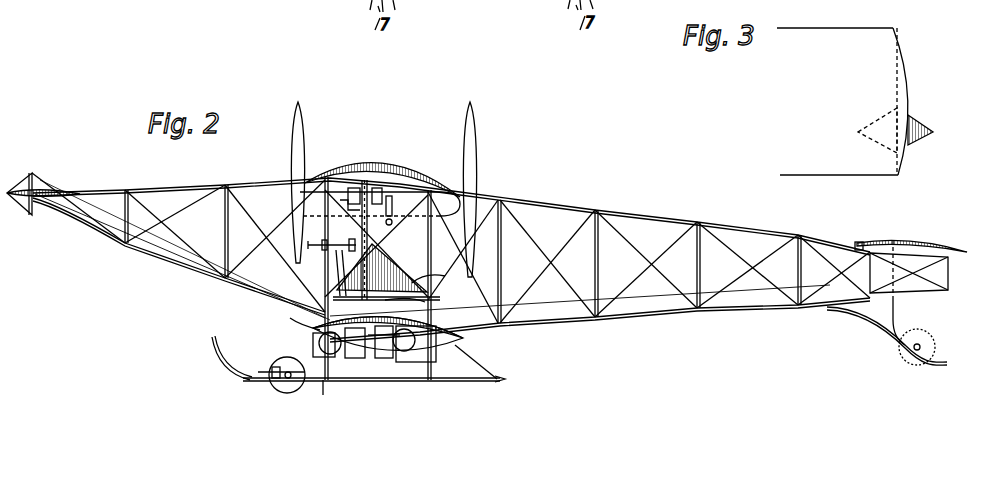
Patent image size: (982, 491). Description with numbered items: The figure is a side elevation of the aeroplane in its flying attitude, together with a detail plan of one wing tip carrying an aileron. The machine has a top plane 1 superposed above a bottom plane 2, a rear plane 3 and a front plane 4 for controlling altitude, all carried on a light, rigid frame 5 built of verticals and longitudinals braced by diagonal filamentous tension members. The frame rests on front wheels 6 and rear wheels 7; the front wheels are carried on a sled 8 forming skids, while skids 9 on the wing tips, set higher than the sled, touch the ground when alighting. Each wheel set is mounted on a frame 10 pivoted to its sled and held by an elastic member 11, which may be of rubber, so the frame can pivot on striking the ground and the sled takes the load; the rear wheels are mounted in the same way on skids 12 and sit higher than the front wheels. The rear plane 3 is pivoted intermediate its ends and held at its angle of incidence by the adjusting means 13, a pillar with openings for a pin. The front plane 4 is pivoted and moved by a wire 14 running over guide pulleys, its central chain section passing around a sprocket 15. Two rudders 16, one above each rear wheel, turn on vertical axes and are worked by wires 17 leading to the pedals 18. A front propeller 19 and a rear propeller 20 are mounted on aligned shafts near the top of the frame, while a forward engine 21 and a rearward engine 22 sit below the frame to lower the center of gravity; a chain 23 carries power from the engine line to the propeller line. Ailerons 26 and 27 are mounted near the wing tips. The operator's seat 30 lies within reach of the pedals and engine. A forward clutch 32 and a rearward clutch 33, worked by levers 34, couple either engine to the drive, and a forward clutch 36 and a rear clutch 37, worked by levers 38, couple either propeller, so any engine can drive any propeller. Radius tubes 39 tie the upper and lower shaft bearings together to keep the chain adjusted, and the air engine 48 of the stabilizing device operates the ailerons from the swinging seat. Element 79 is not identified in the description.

In FIG. 2, the top plane 1 is at (372, 170).
In FIG. 3, the top plane 1 is at (848, 72).
In FIG. 2, the bottom plane 2 is at (481, 357).
In FIG. 2, the rear plane 3 is at (905, 243).
In FIG. 2, the front plane 4 is at (68, 190).
In FIG. 2, the frame 5 is at (570, 205).
In FIG. 2, the front wheels 6 is at (288, 384).
In FIG. 2, the rear wheels 7 is at (905, 355).
In FIG. 2, the sled 8 is at (358, 359).
In FIG. 2, the skids 9 is at (425, 345).
In FIG. 2, the frame 10 is at (268, 378).
In FIG. 2, the elastic member 11 is at (276, 380).
In FIG. 2, the skids 12 is at (888, 342).
In FIG. 2, the adjusting means 13 is at (846, 247).
In FIG. 2, the wire 14 is at (180, 256).
In FIG. 2, the sprocket 15 is at (330, 248).
In FIG. 2, the rudders 16 is at (909, 268).
In FIG. 2, the wires 17 is at (757, 300).
In FIG. 2, the pedals 18 is at (320, 312).
In FIG. 2, the front propeller 19 is at (300, 140).
In FIG. 2, the rear propeller 20 is at (476, 140).
In FIG. 2, the forward engine 21 is at (323, 390).
In FIG. 2, the rearward engine 22 is at (418, 362).
In FIG. 2, the chain 23 is at (378, 278).
In FIG. 2, the aileron 26 is at (386, 269).
In FIG. 2, the aileron 27 is at (300, 214).
In FIG. 3, the aileron 27 is at (933, 128).
In FIG. 2, the operator's seat 30 is at (437, 273).
In FIG. 2, the forward clutch 32 is at (355, 358).
In FIG. 2, the rearward clutch 33 is at (385, 358).
In FIG. 2, the levers 34 is at (430, 300).
In FIG. 2, the forward clutch 36 is at (358, 188).
In FIG. 2, the rear clutch 37 is at (378, 196).
In FIG. 2, the levers 38 is at (393, 210).
In FIG. 2, the radius tubes 39 is at (332, 237).
In FIG. 2, the air engine 48 is at (515, 308).
In FIG. 2, the body fairing 79 is at (452, 214).